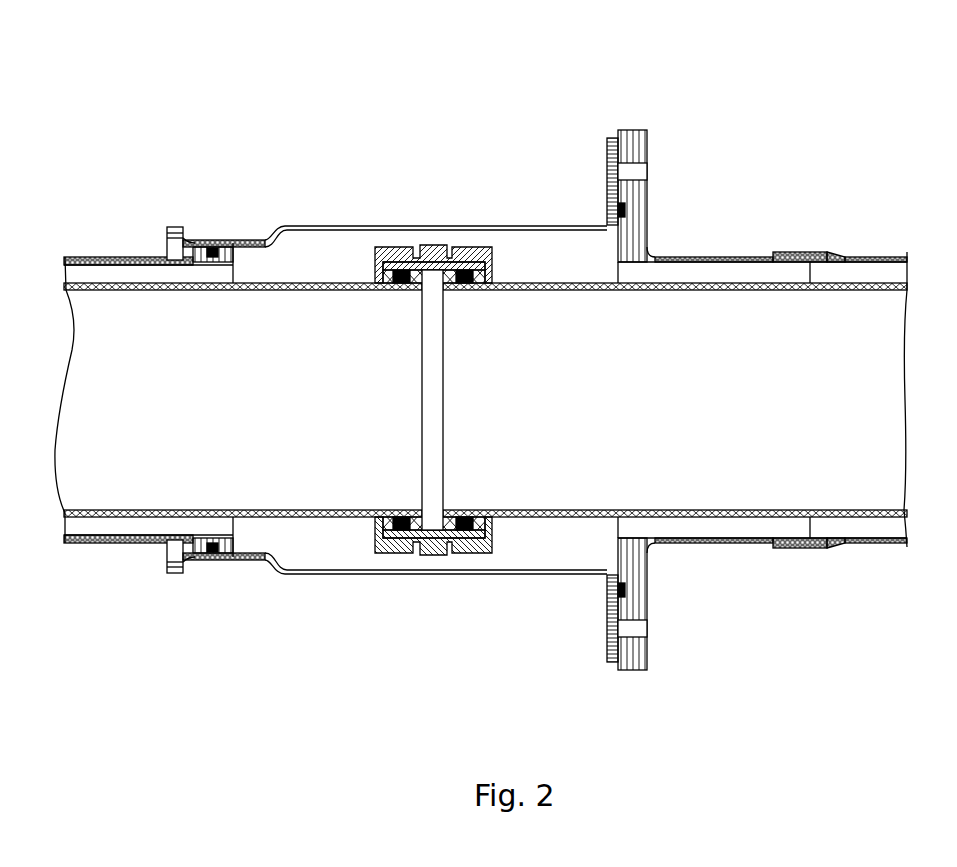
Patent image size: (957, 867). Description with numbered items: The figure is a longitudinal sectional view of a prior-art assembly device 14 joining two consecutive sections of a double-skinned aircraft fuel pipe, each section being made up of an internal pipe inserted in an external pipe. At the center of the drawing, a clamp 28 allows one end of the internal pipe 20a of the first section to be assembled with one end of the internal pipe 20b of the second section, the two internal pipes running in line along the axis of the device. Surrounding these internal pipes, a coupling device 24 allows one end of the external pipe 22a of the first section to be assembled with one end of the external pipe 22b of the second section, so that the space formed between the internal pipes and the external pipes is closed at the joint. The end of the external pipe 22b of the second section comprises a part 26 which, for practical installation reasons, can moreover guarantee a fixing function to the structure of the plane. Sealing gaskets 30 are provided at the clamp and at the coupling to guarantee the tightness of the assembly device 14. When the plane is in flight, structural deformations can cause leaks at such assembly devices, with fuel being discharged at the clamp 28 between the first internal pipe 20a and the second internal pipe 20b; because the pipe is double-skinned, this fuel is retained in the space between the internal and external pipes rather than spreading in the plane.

The assembly device 14 is at (453, 92).
The internal pipe of the first section 20a is at (118, 283).
The internal pipe of the second section 20b is at (889, 282).
The external pipe of the first section 22a is at (82, 257).
The external pipe of the second section 22b is at (828, 255).
The coupling device 24 is at (507, 226).
The part 26 is at (649, 203).
The clamp 28 is at (348, 243).
The sealing gaskets 30 is at (460, 514).